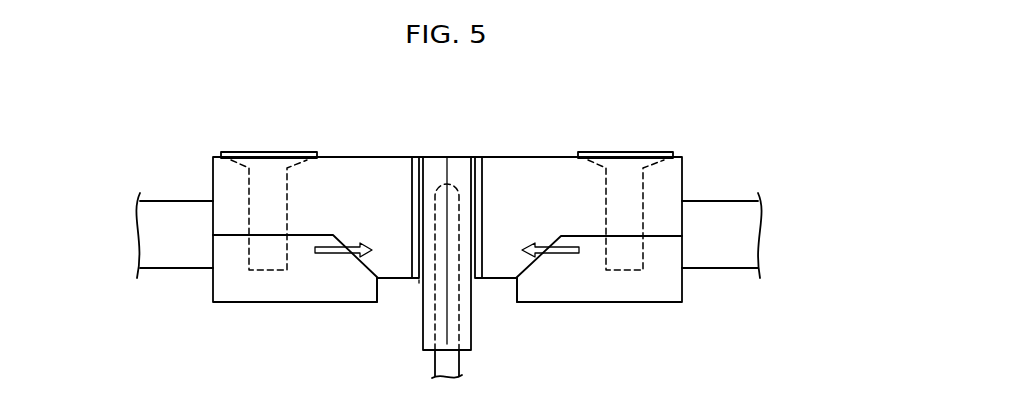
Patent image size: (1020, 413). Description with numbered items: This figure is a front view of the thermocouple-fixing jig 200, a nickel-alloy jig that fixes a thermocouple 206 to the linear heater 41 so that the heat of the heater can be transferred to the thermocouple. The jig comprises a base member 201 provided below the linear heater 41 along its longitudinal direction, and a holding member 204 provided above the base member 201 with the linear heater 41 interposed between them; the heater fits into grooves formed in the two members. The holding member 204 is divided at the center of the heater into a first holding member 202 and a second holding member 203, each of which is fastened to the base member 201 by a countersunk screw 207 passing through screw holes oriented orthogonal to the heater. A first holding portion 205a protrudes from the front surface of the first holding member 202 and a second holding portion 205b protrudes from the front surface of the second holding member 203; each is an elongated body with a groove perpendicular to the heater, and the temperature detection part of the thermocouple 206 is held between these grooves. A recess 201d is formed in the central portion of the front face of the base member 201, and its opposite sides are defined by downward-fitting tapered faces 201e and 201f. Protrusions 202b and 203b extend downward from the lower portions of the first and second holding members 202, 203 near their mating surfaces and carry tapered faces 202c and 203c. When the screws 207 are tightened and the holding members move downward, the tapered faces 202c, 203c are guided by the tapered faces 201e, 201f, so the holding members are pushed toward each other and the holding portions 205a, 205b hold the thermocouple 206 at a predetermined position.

The thermocouple-fixing jig 200 is at (722, 110).
The base member 201 is at (212, 290).
The linear heater 41 is at (713, 268).
The holding member 204 is at (505, 98).
The first holding member 202 is at (388, 157).
The second holding member 203 is at (503, 157).
The protrusion 202b is at (390, 283).
The protrusion 203b is at (502, 282).
The tapered face 202c is at (355, 259).
The tapered face 203c is at (538, 257).
The recess 201d is at (402, 293).
The downward-fitting tapered face 201e is at (360, 223).
The downward-fitting tapered face 201f is at (560, 239).
The first holding portion 205a is at (423, 343).
The second holding portion 205b is at (472, 340).
The thermocouple 206 is at (462, 366).
The countersunk screw 207 is at (270, 152).